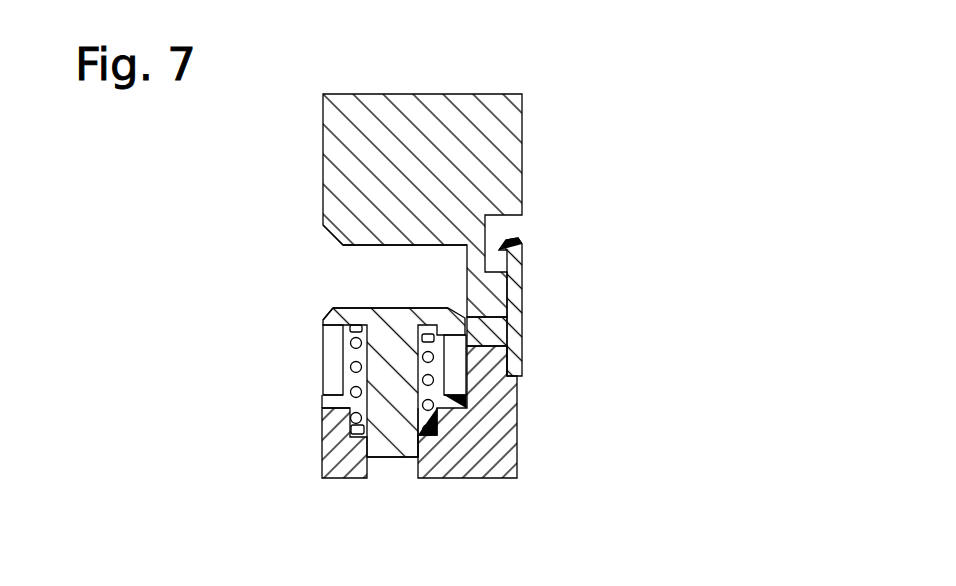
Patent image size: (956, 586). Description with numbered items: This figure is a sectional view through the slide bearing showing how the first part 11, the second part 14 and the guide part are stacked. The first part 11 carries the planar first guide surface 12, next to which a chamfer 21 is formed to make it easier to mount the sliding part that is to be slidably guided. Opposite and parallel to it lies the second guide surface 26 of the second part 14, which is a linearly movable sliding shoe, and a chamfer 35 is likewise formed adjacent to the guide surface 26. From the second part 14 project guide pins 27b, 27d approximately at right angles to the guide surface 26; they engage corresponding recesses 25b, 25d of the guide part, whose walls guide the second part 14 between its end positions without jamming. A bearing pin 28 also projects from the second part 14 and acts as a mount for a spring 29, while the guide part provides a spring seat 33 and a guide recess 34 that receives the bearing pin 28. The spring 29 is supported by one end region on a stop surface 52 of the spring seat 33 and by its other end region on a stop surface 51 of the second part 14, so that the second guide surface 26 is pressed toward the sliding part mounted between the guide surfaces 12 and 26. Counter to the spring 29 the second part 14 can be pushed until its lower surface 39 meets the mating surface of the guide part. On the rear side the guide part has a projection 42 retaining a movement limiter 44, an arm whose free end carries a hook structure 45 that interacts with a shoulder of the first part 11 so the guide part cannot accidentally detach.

The first part 11 is at (470, 138).
The chamfer 21 is at (316, 238).
The first guide surface 12 is at (357, 250).
The second part 14 is at (428, 290).
The hook structure 45 is at (524, 243).
The stop surface 51 is at (437, 346).
The projection 42 is at (502, 442).
The movement limiter 44 is at (497, 352).
The bearing pin 28 is at (385, 440).
The second guide surface 26 is at (398, 306).
The chamfer 35 is at (318, 311).
The guide pin 27b is at (322, 348).
The spring 29 is at (322, 399).
The recess 25b is at (318, 409).
The stop surface 52 is at (337, 431).
The guide recess 34 is at (397, 470).
The spring seat 33 is at (465, 410).
The lower surface 39 is at (450, 413).
The guide pin 27d is at (522, 378).
The recess 25d is at (467, 409).